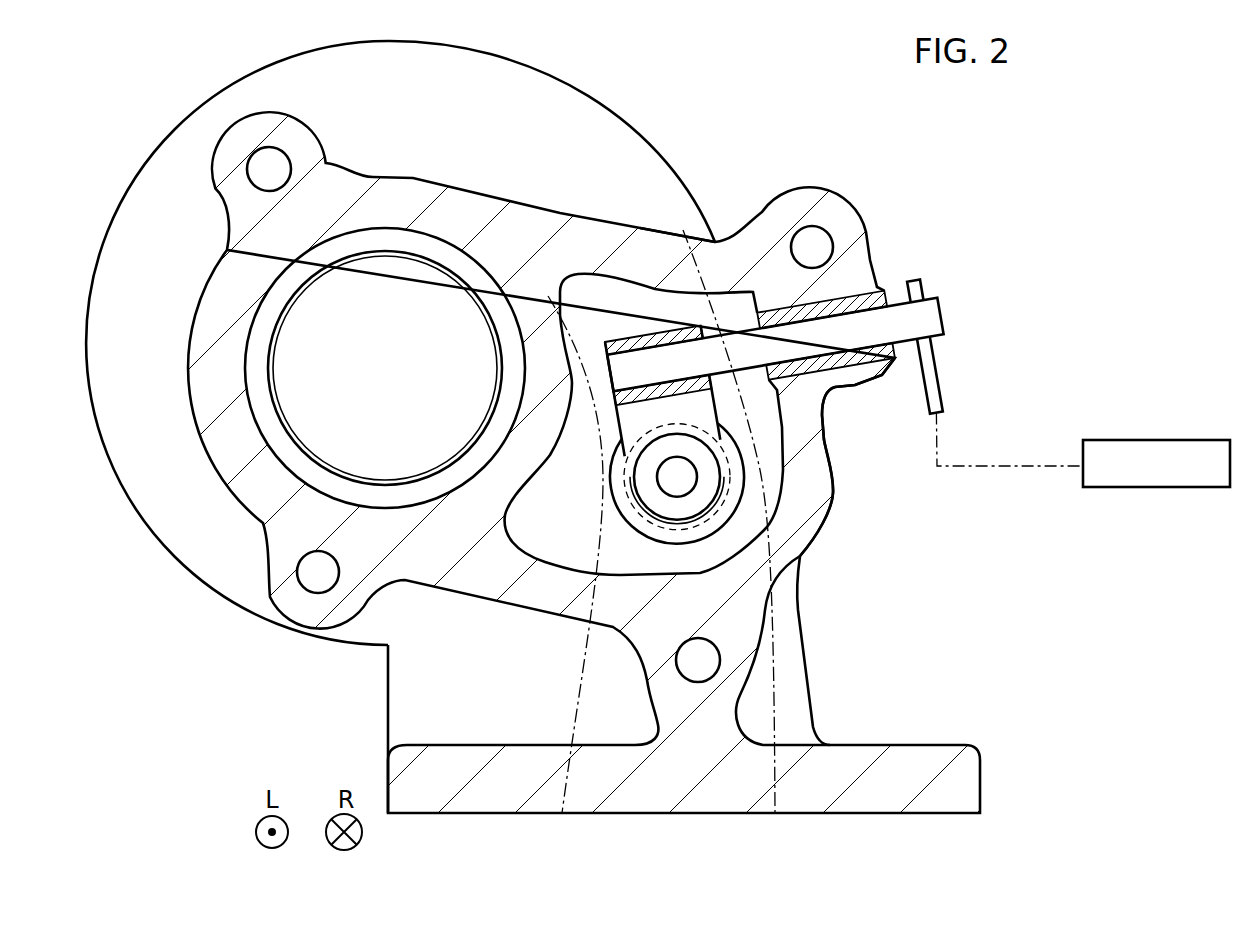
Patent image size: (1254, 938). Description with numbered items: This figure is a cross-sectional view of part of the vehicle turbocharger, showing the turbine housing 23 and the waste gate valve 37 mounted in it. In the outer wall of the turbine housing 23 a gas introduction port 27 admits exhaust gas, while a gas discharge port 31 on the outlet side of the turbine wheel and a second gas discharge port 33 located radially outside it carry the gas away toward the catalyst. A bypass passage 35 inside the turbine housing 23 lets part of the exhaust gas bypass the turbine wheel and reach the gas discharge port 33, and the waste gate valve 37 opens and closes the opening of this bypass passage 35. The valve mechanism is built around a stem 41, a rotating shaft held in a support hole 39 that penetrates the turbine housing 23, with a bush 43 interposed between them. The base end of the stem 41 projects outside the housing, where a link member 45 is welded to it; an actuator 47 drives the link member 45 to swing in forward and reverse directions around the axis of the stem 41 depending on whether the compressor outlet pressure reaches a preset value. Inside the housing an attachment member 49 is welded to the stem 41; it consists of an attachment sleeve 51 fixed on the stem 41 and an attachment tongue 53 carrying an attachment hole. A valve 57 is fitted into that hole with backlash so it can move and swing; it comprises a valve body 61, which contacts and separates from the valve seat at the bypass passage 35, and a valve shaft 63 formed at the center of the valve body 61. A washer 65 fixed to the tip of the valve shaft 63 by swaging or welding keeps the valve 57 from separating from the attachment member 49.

The turbine housing 23 is at (566, 75).
The gas introduction port 27 is at (568, 664).
The gas discharge port 31 is at (410, 287).
The gas discharge port 33 is at (623, 313).
The bypass passage 35 is at (626, 481).
The waste gate valve 37 is at (680, 250).
The support hole 39 is at (838, 302).
The stem 41 is at (770, 340).
The bush 43 is at (868, 362).
The link member 45 is at (938, 379).
The actuator 47 is at (1147, 440).
The attachment member 49 is at (549, 391).
The attachment sleeve 51 is at (603, 342).
The attachment tongue 53 is at (614, 408).
The valve 57 is at (775, 478).
The valve body 61 is at (738, 480).
The valve shaft 63 is at (720, 517).
The washer 65 is at (655, 498).